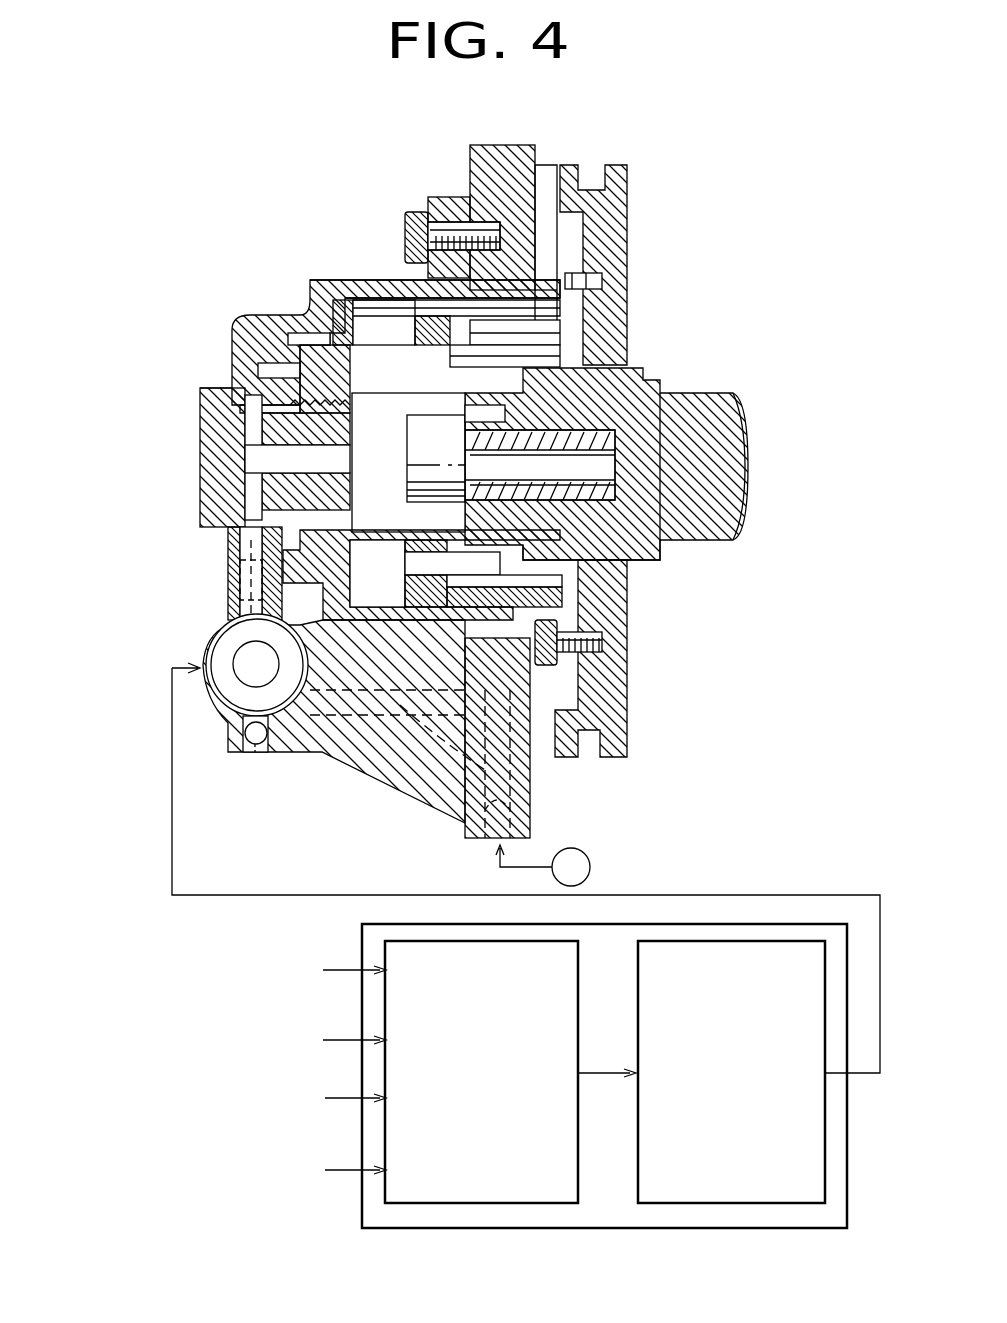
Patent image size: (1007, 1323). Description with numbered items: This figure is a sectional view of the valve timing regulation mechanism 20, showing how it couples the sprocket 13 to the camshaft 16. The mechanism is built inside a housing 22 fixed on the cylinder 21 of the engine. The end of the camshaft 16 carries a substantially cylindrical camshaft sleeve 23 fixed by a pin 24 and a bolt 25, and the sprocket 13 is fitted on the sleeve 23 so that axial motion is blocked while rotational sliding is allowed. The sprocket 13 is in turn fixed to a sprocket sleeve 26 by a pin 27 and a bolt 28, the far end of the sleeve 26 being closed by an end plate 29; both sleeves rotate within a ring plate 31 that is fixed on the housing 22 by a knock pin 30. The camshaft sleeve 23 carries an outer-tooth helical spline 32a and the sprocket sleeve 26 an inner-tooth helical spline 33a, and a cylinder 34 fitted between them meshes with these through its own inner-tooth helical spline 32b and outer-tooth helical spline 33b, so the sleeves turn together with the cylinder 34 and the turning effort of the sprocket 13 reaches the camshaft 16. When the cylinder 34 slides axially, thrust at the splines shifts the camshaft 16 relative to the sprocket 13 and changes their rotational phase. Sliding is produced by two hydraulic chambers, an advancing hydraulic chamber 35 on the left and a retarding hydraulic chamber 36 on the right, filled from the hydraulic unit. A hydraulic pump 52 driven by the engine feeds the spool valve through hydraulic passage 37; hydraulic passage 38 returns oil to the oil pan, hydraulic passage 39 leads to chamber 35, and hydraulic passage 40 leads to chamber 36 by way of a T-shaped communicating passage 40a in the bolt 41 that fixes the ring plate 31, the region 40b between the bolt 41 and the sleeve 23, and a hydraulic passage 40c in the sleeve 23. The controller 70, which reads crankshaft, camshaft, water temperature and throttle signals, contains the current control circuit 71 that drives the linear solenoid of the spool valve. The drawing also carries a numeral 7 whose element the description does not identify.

The timing pulley 7 is at (628, 186).
The sprocket 13 is at (208, 640).
The camshaft 16 is at (717, 400).
The valve timing regulation mechanism 20 is at (668, 808).
The cylinder 21 is at (504, 165).
The housing 22 is at (444, 200).
The camshaft sleeve 23 is at (550, 378).
The pin 24 is at (637, 393).
The bolt 25 is at (605, 538).
The sprocket sleeve 26 is at (500, 285).
The pin 27 is at (596, 280).
The bolt 28 is at (603, 643).
The end plate 29 is at (270, 322).
The knock pin 30 is at (265, 368).
The ring plate 31 is at (250, 388).
The outer-tooth helical spline 32a is at (548, 350).
The inner-tooth helical spline 32b is at (428, 330).
The inner-tooth helical spline 33a is at (558, 335).
The outer-tooth helical spline 33b is at (553, 300).
The cylinder 34 is at (365, 335).
The hydraulic chamber 35 is at (365, 332).
The hydraulic chamber 36 is at (418, 262).
The hydraulic passage 37 is at (530, 820).
The hydraulic passage 38 is at (505, 745).
The hydraulic passage 39 is at (243, 570).
The hydraulic passage 40 is at (250, 530).
The T-shaped communicating passage 40a is at (268, 458).
The region 40b is at (375, 492).
The hydraulic passage 40c is at (505, 418).
The bolt 41 is at (246, 420).
The hydraulic pump 52 is at (592, 869).
The controller 70 is at (848, 1208).
The current control circuit 71 is at (826, 1153).